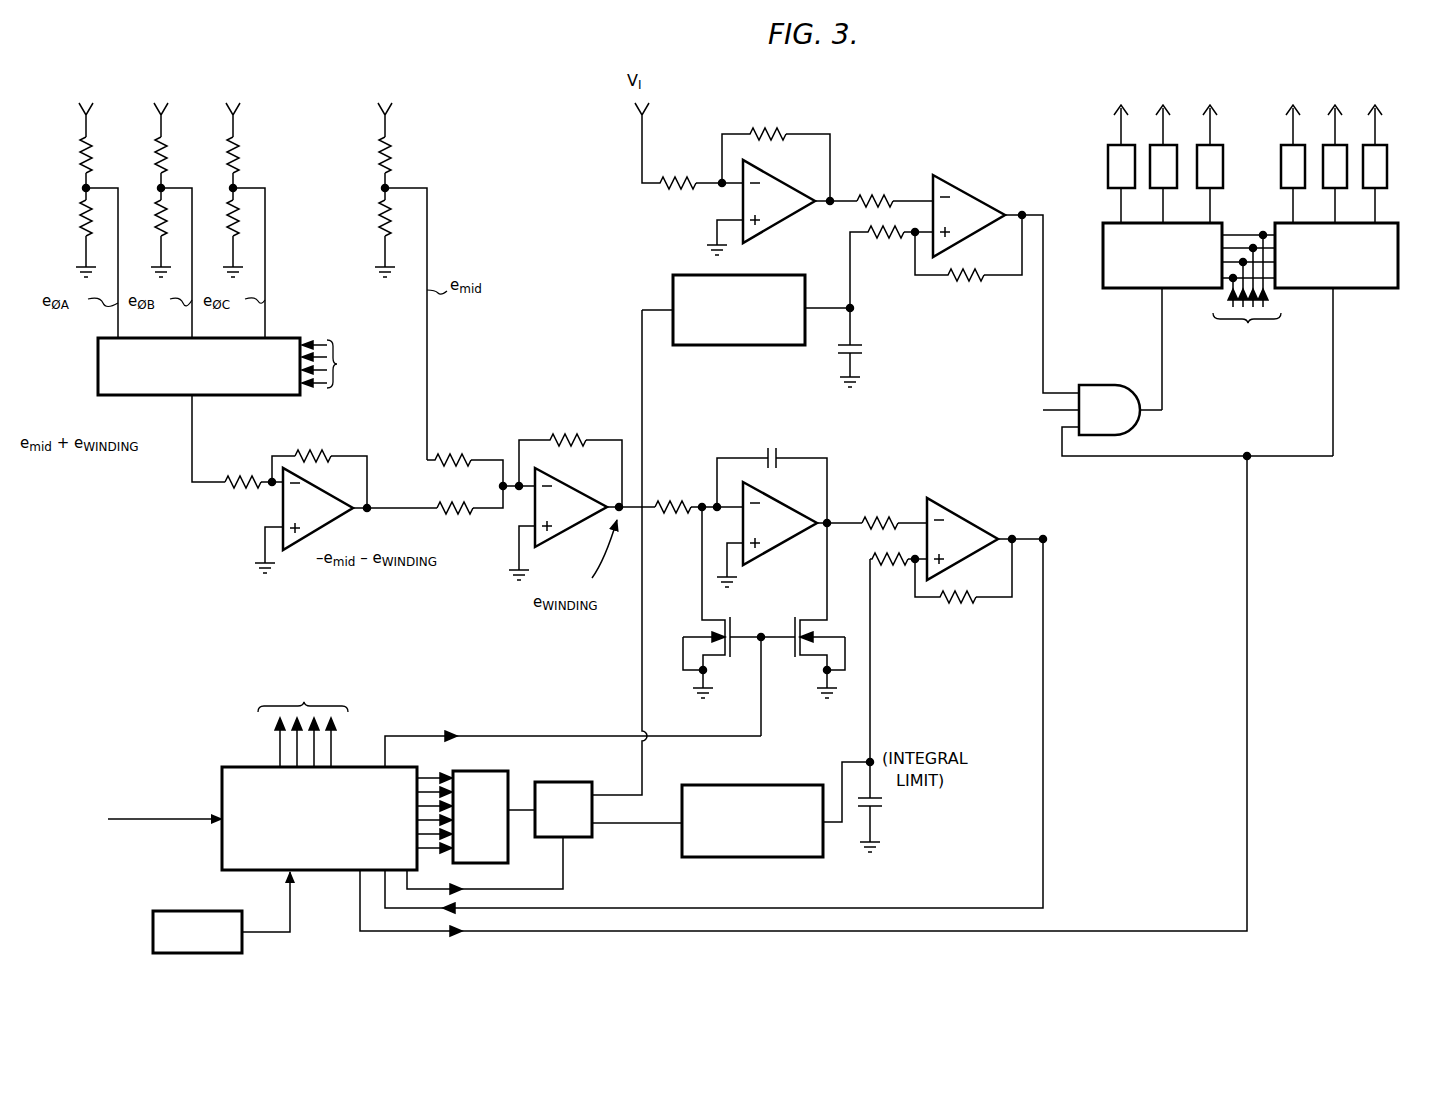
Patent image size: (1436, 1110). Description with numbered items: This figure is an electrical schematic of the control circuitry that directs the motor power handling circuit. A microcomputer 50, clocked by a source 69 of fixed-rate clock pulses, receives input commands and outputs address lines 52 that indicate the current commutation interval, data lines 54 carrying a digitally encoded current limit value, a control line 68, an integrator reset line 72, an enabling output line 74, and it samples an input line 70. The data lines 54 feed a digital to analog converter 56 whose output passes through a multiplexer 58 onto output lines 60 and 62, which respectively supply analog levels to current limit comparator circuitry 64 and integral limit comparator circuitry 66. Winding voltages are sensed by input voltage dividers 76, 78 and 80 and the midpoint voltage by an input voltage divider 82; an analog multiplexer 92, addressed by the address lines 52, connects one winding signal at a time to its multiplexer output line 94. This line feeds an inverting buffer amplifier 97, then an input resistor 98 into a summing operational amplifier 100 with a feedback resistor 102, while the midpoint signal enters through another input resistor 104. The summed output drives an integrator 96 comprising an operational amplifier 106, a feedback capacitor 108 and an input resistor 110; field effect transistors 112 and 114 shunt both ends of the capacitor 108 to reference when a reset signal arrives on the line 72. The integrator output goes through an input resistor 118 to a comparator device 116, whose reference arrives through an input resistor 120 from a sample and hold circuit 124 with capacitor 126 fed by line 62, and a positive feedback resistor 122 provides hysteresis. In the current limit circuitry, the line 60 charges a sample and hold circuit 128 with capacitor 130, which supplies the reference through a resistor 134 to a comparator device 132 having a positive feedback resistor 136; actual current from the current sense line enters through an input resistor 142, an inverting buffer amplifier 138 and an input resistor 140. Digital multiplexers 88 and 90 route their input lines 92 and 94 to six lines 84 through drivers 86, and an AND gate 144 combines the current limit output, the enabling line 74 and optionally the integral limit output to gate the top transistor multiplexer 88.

The microcomputer 50 is at (232, 872).
The address lines 52 is at (1218, 304).
The data lines 54 is at (442, 768).
The digital to analog converter 56 is at (488, 771).
The multiplexer 58 is at (570, 782).
The output line 60 is at (644, 784).
The output line 62 is at (656, 826).
The current limit comparator circuitry 64 is at (964, 234).
The integral limit comparator circuitry 66 is at (941, 516).
The microcomputer output line 68 is at (565, 858).
The source of basic clock pulses 69 is at (244, 952).
The microcomputer input line 70 is at (762, 906).
The integrator reset line 72 is at (555, 735).
The output line 74 is at (1246, 560).
The input voltage divider 76 is at (72, 226).
The input voltage divider 78 is at (137, 185).
The input voltage divider 80 is at (263, 176).
The input voltage divider 82 is at (427, 176).
The lines 84 is at (1096, 130).
The drivers 86 is at (1096, 170).
The multiplexer 88 is at (1103, 235).
The multiplexer 90 is at (1372, 290).
The analog multiplexer 92 is at (98, 372).
The multiplexer output line 94 is at (192, 432).
The integrator 96 is at (772, 565).
The inverting buffer amplifier 97 is at (320, 495).
The input resistor 98 is at (437, 505).
The summing operational amplifier 100 is at (556, 482).
The feedback resistor 102 is at (600, 440).
The input resistor 104 is at (470, 455).
The operational amplifier 106 is at (772, 548).
The feedback capacitor 108 is at (765, 455).
The input resistor 110 is at (680, 504).
The field effect transistor 112 is at (730, 636).
The field effect transistor 114 is at (795, 622).
The comparator device 116 is at (956, 514).
The input resistor 118 is at (884, 520).
The input resistor 120 is at (873, 556).
The positive feedback resistor 122 is at (957, 604).
The sample and hold circuit 124 is at (766, 785).
The capacitor 126 is at (880, 805).
The sample and hold circuit 128 is at (670, 285).
The capacitor 130 is at (845, 356).
The comparator device 132 is at (952, 194).
The resistor 134 is at (897, 240).
The positive feedback resistor 136 is at (990, 265).
The inverting buffer amplifier 138 is at (753, 175).
The input resistor 140 is at (873, 198).
The input resistor 142 is at (686, 180).
The AND gate 144 is at (1132, 427).